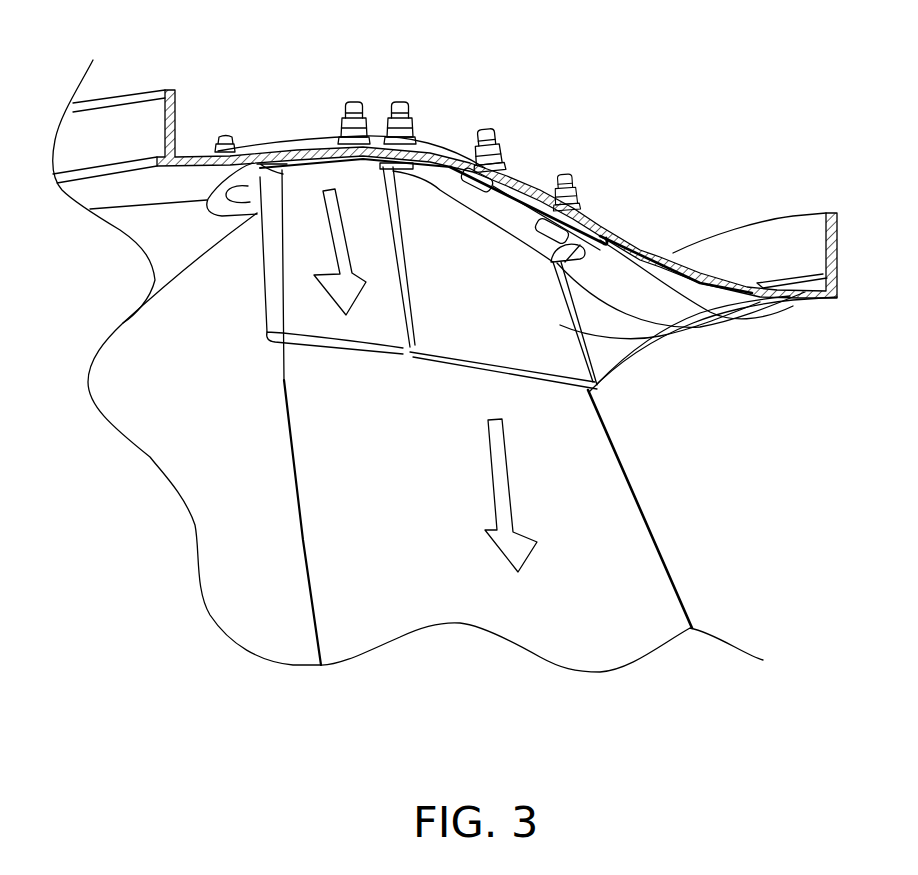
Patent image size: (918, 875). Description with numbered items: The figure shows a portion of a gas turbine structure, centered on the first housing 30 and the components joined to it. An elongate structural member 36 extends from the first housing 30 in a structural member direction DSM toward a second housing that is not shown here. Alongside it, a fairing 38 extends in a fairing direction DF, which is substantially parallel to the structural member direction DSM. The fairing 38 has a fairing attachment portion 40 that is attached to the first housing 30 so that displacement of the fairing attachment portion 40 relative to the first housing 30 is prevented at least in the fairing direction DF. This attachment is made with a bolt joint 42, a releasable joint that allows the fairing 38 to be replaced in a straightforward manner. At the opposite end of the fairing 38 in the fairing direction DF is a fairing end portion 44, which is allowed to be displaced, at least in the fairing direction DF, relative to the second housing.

The first housing 30 is at (627, 230).
The elongate structural member 36 is at (612, 514).
The fairing 38 is at (530, 322).
The fairing attachment portion 40 is at (524, 197).
The bolt joint 42 is at (527, 127).
The fairing end portion 44 is at (537, 385).
The fairing direction DF is at (325, 236).
The structural member direction DSM is at (507, 475).